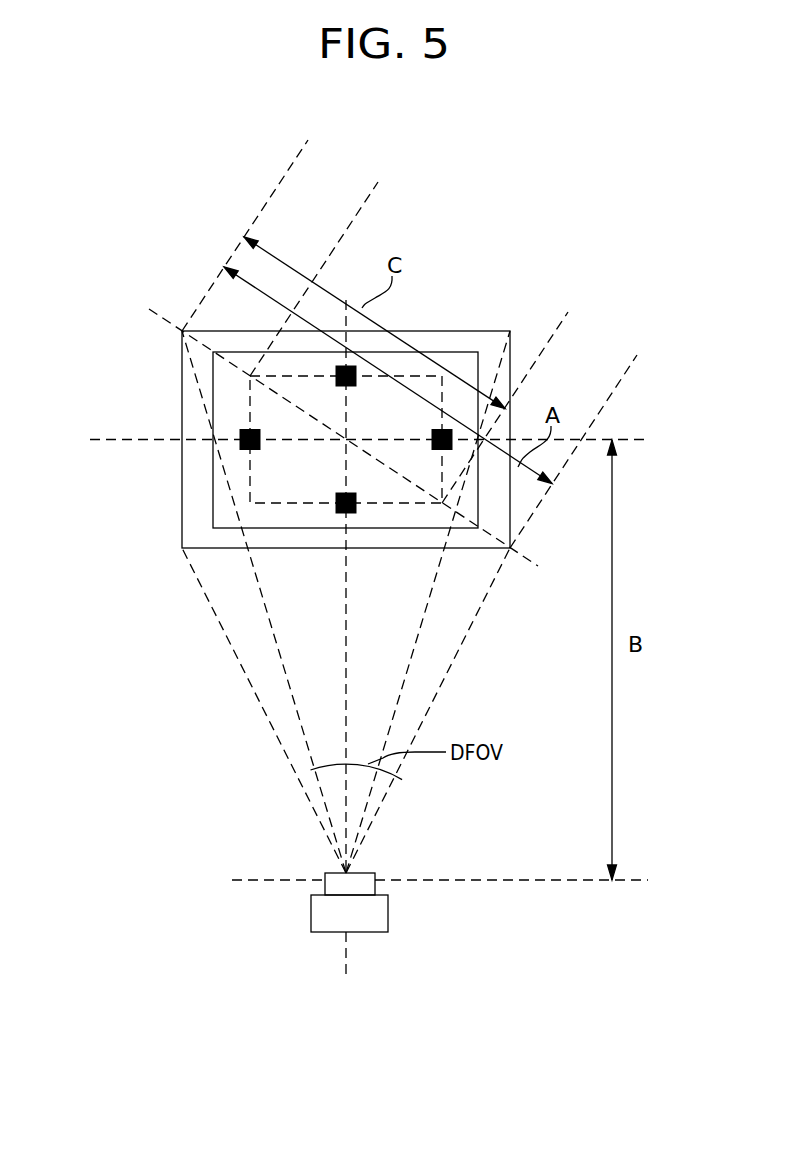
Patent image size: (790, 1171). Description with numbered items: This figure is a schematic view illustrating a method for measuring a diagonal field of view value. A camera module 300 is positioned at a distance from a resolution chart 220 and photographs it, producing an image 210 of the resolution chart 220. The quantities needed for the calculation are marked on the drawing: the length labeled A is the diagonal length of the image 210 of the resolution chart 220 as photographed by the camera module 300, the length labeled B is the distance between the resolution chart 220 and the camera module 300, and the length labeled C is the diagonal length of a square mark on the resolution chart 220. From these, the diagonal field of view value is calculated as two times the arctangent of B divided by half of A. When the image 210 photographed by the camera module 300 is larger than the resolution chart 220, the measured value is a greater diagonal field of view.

The image 210 is at (181, 391).
The resolution chart 220 is at (213, 480).
The camera module 300 is at (320, 913).